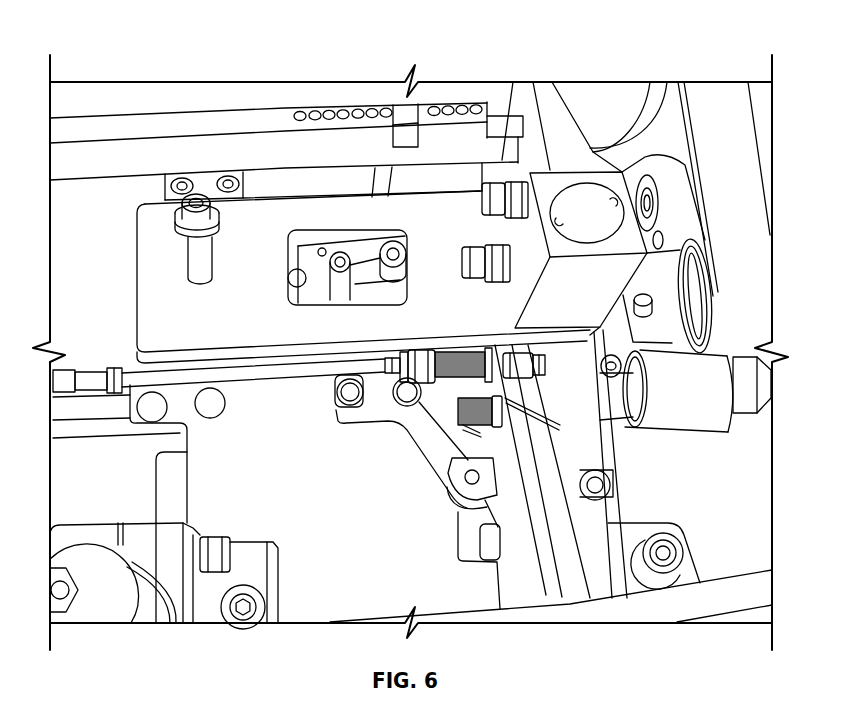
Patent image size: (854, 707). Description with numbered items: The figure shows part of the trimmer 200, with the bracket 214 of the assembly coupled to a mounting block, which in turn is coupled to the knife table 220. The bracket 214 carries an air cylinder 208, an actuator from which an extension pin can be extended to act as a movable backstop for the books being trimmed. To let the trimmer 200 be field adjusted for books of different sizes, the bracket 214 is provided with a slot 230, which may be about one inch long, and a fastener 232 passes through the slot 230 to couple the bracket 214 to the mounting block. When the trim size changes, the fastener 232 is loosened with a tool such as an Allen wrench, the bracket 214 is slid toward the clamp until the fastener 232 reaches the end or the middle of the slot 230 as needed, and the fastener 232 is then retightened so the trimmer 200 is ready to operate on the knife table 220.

The trimmer 200 is at (136, 32).
The air cylinder 208 is at (575, 193).
The bracket 214 is at (273, 210).
The knife table 220 is at (328, 605).
The slot 230 is at (195, 267).
The fastener 232 is at (197, 202).